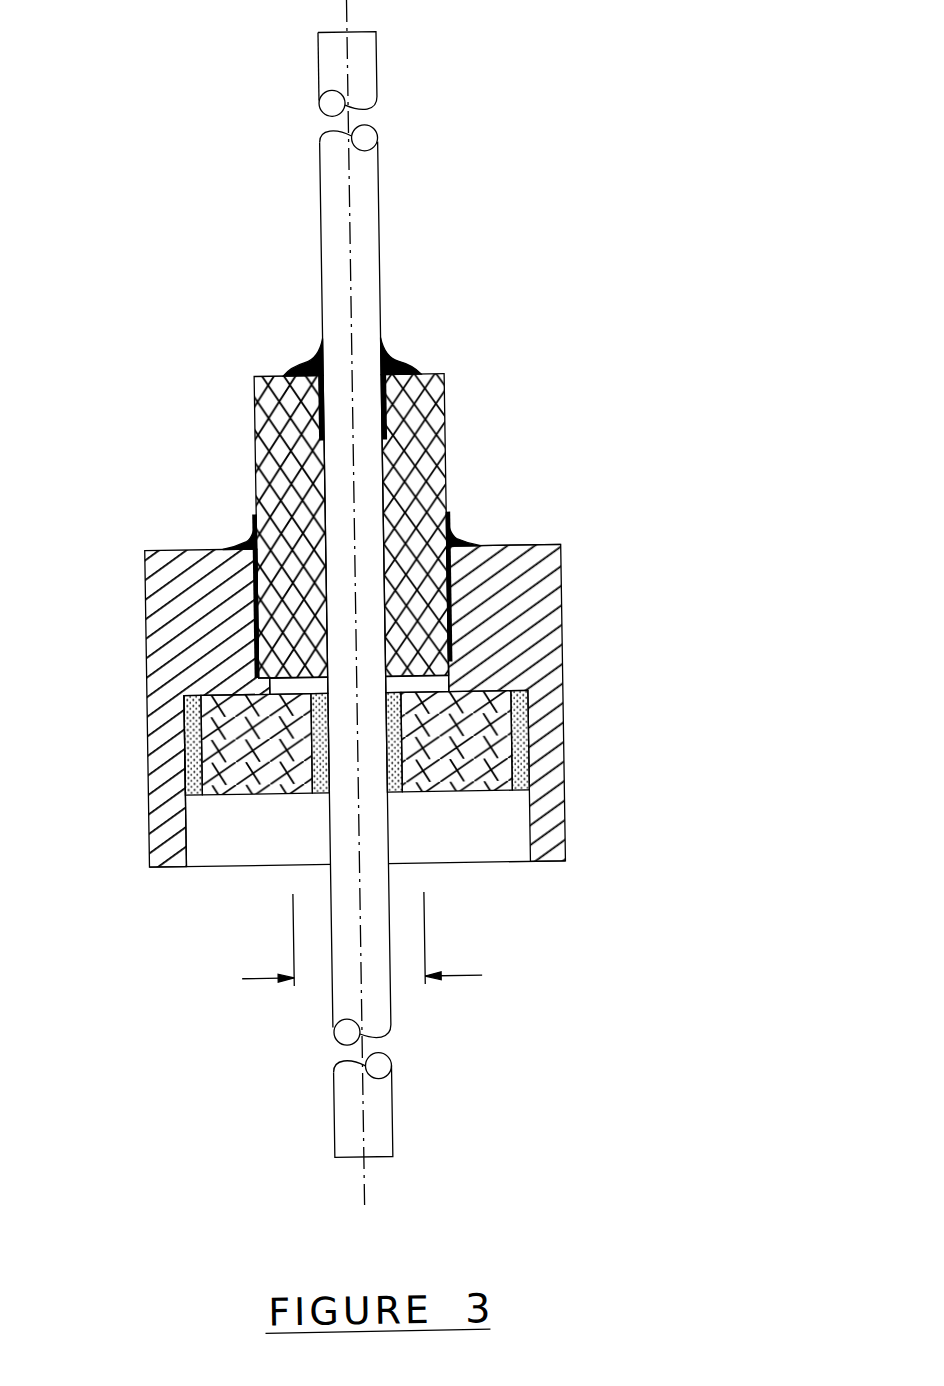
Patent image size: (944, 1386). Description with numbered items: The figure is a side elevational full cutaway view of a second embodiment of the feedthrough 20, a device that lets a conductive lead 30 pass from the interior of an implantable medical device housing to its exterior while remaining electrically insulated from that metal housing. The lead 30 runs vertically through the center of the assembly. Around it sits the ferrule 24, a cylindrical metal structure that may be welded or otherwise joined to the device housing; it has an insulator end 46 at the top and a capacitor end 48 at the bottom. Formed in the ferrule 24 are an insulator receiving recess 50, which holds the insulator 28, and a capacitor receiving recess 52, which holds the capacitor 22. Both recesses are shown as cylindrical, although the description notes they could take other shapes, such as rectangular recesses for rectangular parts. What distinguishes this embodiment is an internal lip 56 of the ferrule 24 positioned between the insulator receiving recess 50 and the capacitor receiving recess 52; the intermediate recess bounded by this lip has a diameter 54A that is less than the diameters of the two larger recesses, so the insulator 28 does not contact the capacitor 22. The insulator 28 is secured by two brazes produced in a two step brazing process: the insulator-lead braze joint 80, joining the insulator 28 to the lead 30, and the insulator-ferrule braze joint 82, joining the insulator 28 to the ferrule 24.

The feedthrough 20 is at (667, 111).
The capacitor 22 is at (489, 795).
The ferrule 24 is at (567, 601).
The insulator 28 is at (448, 401).
The conductive lead 30 is at (373, 288).
The insulator end 46 is at (564, 548).
The capacitor end 48 is at (548, 864).
The insulator receiving recess 50 is at (258, 618).
The capacitor receiving recess 52 is at (181, 820).
The diameter of intermediate recess 54A is at (396, 941).
The internal lip 56 is at (445, 683).
The insulator-lead braze joint 80 is at (302, 360).
The insulator-ferrule braze joint 82 is at (244, 540).